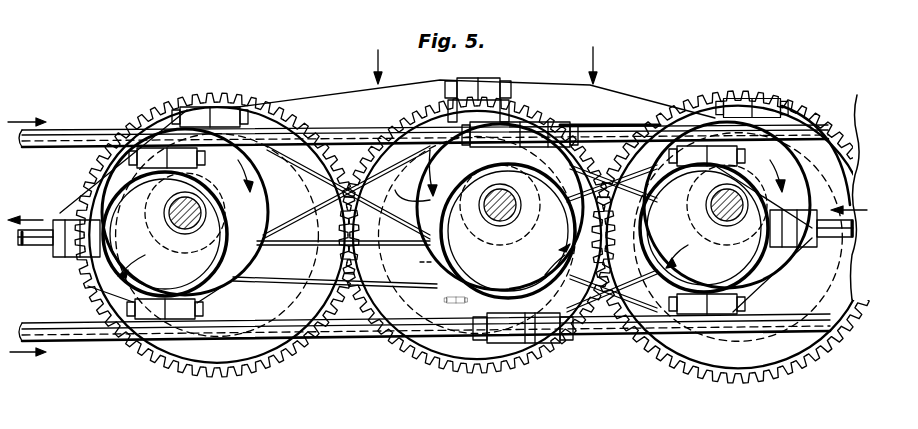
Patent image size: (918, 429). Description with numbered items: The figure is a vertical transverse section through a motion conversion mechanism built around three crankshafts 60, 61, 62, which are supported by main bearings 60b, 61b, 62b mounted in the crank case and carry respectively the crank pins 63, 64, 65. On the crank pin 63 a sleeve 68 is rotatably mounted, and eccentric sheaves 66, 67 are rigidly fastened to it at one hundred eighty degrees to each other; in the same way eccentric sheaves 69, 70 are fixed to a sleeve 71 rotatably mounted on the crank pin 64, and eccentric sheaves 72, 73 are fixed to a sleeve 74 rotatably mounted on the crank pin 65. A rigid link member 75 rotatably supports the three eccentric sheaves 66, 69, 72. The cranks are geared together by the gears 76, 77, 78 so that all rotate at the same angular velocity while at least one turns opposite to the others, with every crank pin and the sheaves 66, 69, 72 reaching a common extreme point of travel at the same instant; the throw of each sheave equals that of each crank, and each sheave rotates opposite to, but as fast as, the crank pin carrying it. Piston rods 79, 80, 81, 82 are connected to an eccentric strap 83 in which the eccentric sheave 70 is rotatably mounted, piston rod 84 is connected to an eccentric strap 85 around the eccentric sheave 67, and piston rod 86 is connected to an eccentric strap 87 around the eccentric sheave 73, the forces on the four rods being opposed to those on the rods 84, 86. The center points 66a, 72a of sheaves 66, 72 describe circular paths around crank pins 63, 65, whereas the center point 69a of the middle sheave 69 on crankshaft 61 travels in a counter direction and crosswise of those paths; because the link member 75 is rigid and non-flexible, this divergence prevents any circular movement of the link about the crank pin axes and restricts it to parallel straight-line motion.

The crankshaft 60 is at (220, 275).
The main bearing 60b is at (245, 282).
The crankshaft 61 is at (335, 295).
The main bearing 61b is at (426, 263).
The crankshaft 62 is at (728, 292).
The main bearing 62b is at (735, 338).
The crank pin 63 is at (192, 200).
The crank pin 64 is at (478, 186).
The crank pin 65 is at (725, 207).
The eccentric sheave 66 is at (272, 188).
The center point 66a is at (282, 227).
The eccentric sheave 67 is at (100, 268).
The sleeve 68 is at (168, 222).
The eccentric sheave 69 is at (396, 194).
The center point 69a is at (520, 147).
The eccentric sheave 70 is at (452, 303).
The sleeve 71 is at (500, 211).
The eccentric sheave 72 is at (812, 110).
The center point 72a is at (742, 98).
The eccentric sheave 73 is at (663, 322).
The sleeve 74 is at (748, 192).
The rigid link member 75 is at (340, 185).
The gear 76 is at (208, 378).
The gear 77 is at (452, 360).
The gear 78 is at (740, 370).
The piston rod 79 is at (85, 130).
The piston rod 80 is at (86, 336).
The piston rod 81 is at (642, 127).
The piston rod 82 is at (602, 333).
The eccentric strap 83 is at (540, 345).
The piston rod 84 is at (32, 242).
The eccentric strap 85 is at (72, 222).
The piston rod 86 is at (832, 238).
The eccentric strap 87 is at (808, 250).